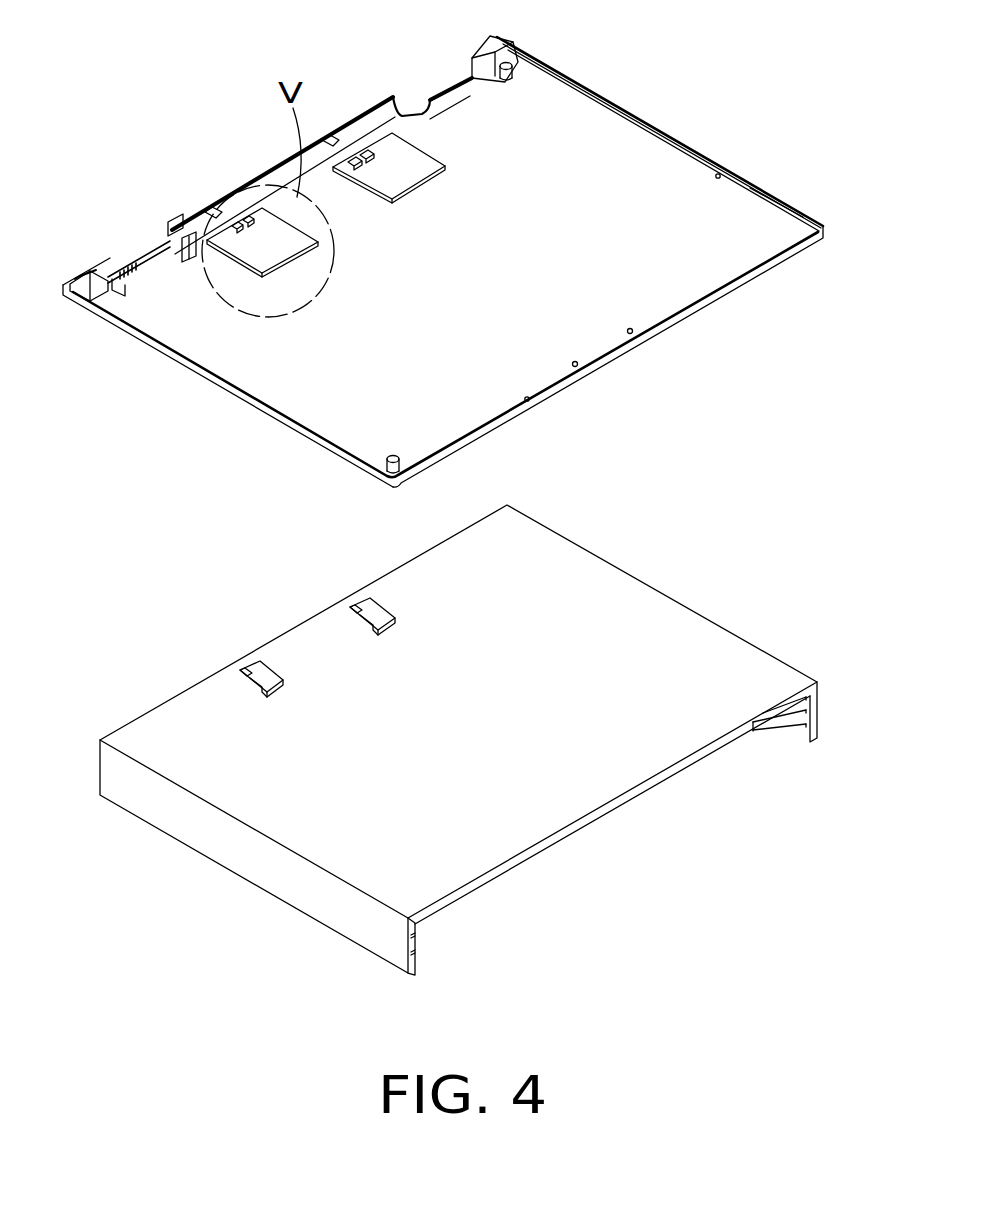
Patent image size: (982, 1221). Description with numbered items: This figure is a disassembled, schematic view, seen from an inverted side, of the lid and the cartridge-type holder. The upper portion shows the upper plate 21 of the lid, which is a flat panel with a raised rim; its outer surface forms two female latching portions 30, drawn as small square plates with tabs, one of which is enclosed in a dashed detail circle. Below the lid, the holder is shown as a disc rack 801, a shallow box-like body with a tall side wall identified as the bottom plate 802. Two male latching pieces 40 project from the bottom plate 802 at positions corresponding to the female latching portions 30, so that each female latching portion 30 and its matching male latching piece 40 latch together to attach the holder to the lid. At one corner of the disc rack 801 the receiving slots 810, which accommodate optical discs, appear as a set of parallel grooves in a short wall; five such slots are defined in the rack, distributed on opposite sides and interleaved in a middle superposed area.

The upper plate 21 is at (550, 120).
The female latching portion 30 is at (272, 230).
The male latching piece 40 is at (253, 653).
The disc rack 801 is at (486, 729).
The bottom plate 802 is at (268, 813).
The receiving slot 810 is at (787, 727).